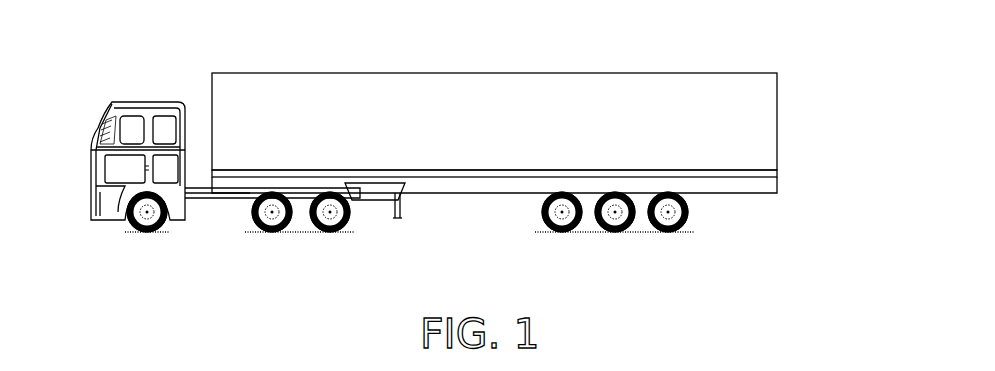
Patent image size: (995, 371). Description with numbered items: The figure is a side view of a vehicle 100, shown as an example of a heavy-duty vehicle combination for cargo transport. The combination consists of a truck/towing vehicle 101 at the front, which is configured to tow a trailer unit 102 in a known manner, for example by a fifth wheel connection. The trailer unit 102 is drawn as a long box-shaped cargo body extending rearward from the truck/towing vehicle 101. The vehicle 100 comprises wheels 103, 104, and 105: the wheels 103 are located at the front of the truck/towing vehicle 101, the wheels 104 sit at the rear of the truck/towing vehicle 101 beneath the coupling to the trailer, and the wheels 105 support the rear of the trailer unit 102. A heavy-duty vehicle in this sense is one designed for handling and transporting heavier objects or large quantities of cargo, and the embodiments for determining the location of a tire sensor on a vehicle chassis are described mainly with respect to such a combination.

The vehicle 100 is at (177, 50).
The truck/towing vehicle 101 is at (110, 100).
The trailer unit 102 is at (510, 62).
The wheels 103 is at (125, 238).
The wheels 104 is at (263, 238).
The wheels 105 is at (543, 238).